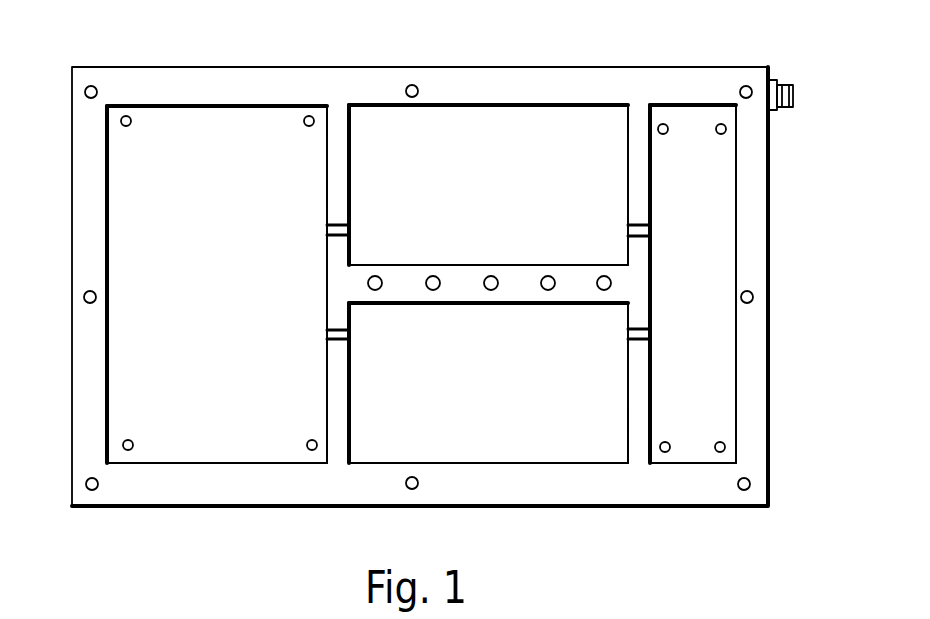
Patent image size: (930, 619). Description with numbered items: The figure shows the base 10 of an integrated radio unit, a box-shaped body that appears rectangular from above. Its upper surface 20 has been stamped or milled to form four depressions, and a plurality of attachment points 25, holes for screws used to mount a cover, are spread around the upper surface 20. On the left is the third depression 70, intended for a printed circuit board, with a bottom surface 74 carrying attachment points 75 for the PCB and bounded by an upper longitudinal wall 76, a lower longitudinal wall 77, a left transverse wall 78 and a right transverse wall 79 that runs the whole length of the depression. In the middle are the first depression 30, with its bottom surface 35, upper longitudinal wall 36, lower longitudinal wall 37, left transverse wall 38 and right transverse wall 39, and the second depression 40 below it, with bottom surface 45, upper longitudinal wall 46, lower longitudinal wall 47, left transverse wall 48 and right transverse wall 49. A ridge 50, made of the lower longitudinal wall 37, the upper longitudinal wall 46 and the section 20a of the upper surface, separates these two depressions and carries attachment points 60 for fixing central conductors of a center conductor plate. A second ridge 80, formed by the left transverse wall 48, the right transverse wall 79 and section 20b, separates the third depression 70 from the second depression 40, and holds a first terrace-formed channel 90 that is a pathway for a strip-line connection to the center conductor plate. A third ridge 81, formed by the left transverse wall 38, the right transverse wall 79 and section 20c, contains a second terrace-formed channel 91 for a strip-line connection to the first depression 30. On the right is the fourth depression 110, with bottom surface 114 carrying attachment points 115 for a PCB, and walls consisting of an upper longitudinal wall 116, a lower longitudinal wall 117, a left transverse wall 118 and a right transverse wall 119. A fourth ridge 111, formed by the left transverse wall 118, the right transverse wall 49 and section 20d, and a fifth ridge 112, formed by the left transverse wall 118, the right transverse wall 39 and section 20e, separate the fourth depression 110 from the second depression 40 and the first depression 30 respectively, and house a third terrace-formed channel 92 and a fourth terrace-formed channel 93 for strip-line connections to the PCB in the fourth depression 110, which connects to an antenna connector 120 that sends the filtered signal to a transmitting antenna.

The base 10 is at (61, 32).
The upper surface 20 is at (550, 82).
The section of the upper surface 20a is at (457, 290).
The section of the upper surface 20b is at (343, 368).
The section of the upper surface 20c is at (327, 193).
The section of the upper surface 20d is at (628, 423).
The section of the upper surface 20e is at (640, 170).
The attachment points 25 is at (747, 87).
The first depression 30 is at (488, 144).
The bottom surface 35 is at (503, 183).
The upper longitudinal wall 36 is at (540, 107).
The lower longitudinal wall 37 is at (540, 265).
The left transverse wall 38 is at (352, 160).
The right transverse wall 39 is at (628, 157).
The second depression 40 is at (488, 429).
The bottom surface 45 is at (483, 400).
The upper longitudinal wall 46 is at (505, 303).
The lower longitudinal wall 47 is at (467, 463).
The left transverse wall 48 is at (352, 407).
The right transverse wall 49 is at (628, 378).
The ridge 50 is at (489, 286).
The attachment points 60 is at (430, 282).
The third depression 70 is at (172, 284).
The bottom surface 74 is at (208, 290).
The attachment points 75 is at (133, 438).
The upper longitudinal wall 76 is at (215, 108).
The lower longitudinal wall 77 is at (228, 463).
The left transverse wall 78 is at (107, 361).
The right transverse wall 79 is at (327, 380).
The second ridge 80 is at (337, 458).
The third ridge 81 is at (334, 122).
The first terrace-formed channel 90 is at (352, 333).
The second terrace-formed channel 91 is at (352, 232).
The third terrace-formed channel 92 is at (650, 335).
The fourth terrace-formed channel 93 is at (647, 233).
The fourth depression 110 is at (739, 287).
The fourth ridge 111 is at (638, 453).
The fifth ridge 112 is at (637, 118).
The bottom surface 114 is at (705, 366).
The attachment points 115 is at (725, 448).
The upper longitudinal wall 116 is at (688, 110).
The lower longitudinal wall 117 is at (693, 463).
The left transverse wall 118 is at (650, 386).
The right transverse wall 119 is at (735, 297).
The antenna connector 120 is at (795, 95).